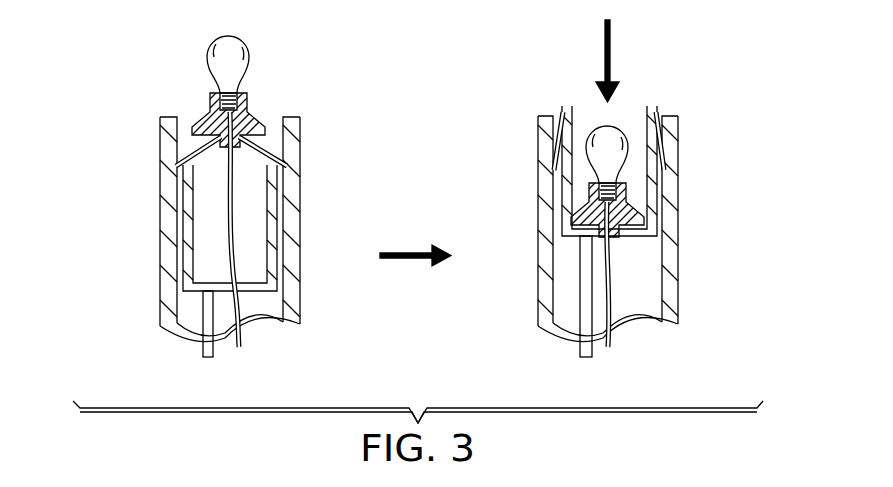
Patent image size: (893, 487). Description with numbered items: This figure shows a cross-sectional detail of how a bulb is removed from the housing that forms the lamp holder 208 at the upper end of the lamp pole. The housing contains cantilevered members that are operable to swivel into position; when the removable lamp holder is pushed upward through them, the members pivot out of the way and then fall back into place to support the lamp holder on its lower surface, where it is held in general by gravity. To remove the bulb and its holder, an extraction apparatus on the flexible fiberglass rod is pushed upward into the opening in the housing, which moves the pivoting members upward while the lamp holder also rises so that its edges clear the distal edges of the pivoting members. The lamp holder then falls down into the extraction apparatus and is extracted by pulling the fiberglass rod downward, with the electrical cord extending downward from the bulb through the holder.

The lamp holder 208 is at (190, 106).